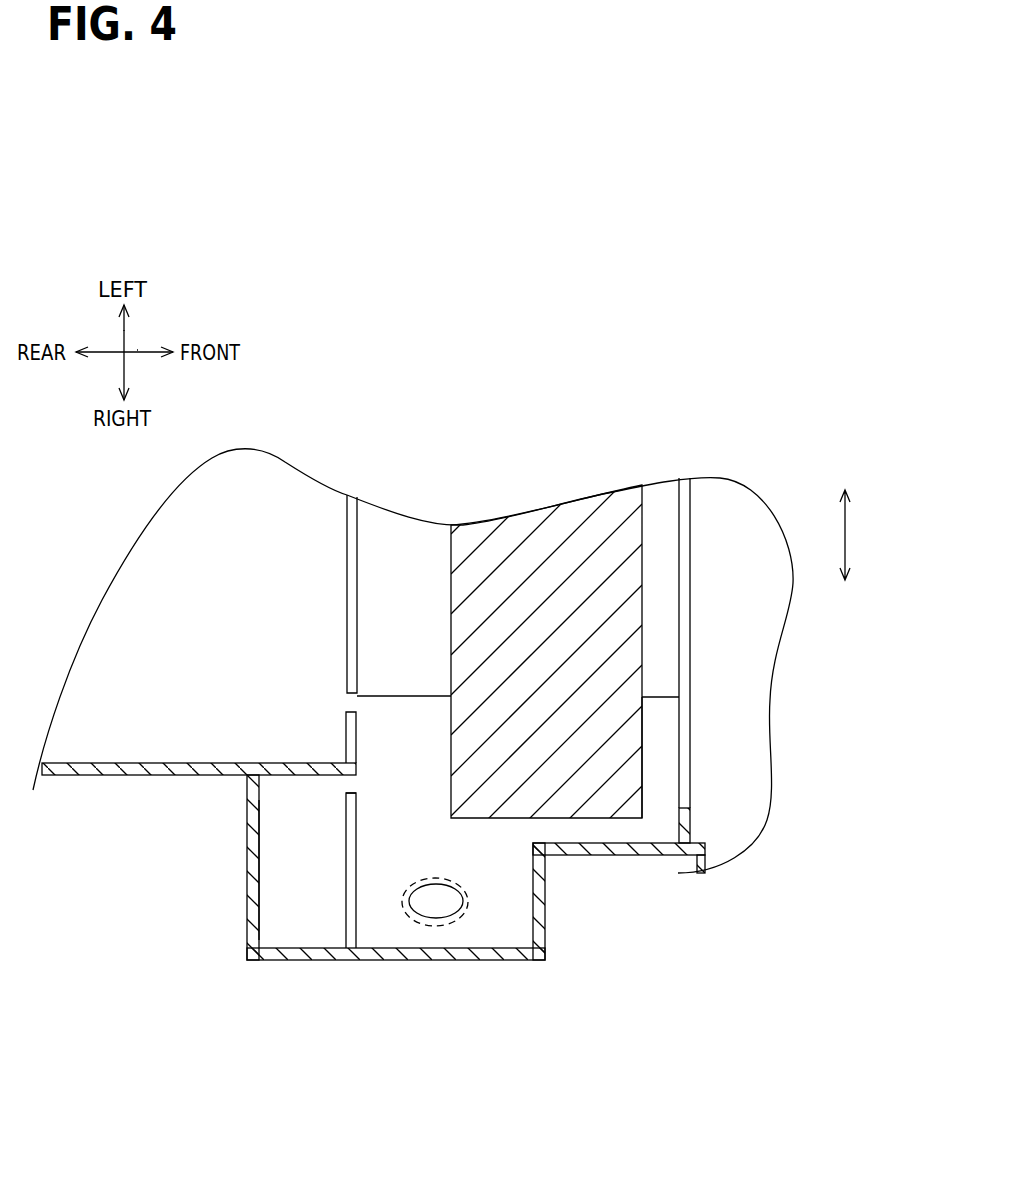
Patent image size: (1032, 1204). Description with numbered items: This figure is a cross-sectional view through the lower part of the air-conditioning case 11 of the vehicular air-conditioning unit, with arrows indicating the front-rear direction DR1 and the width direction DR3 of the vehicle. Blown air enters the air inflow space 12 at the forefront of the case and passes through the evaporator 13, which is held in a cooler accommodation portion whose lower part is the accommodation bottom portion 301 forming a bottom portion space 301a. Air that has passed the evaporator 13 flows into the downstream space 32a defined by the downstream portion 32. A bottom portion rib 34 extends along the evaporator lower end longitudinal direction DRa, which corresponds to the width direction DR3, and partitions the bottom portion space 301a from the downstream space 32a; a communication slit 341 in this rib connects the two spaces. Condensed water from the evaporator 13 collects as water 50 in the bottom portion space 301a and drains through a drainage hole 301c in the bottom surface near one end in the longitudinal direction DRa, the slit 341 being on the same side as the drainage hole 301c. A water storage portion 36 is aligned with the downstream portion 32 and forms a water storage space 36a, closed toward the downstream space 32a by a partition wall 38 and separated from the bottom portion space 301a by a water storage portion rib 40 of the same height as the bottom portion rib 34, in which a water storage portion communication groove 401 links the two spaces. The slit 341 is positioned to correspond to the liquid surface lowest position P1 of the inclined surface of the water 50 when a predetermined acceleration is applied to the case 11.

The air-conditioning case 11 is at (288, 997).
The air inflow space 12 is at (750, 687).
The evaporator 13 is at (512, 538).
The downstream portion 32 is at (110, 777).
The downstream space 32a is at (148, 559).
The bottom portion rib 34 is at (347, 537).
The communication slit 341 is at (352, 712).
The water storage portion 36 is at (270, 960).
The water storage space 36a is at (281, 902).
The partition wall 38 is at (278, 770).
The water storage portion rib 40 is at (353, 897).
The water storage portion communication groove 401 is at (356, 785).
The water 50 is at (662, 770).
The accommodation bottom portion 301 is at (515, 975).
The bottom portion space 301a is at (399, 532).
The drainage hole 301c is at (433, 910).
The liquid surface lowest position P1 is at (660, 697).
The front-rear direction DR1 is at (137, 350).
The width direction DR3 is at (124, 330).
The evaporator lower end longitudinal direction DRa is at (845, 535).